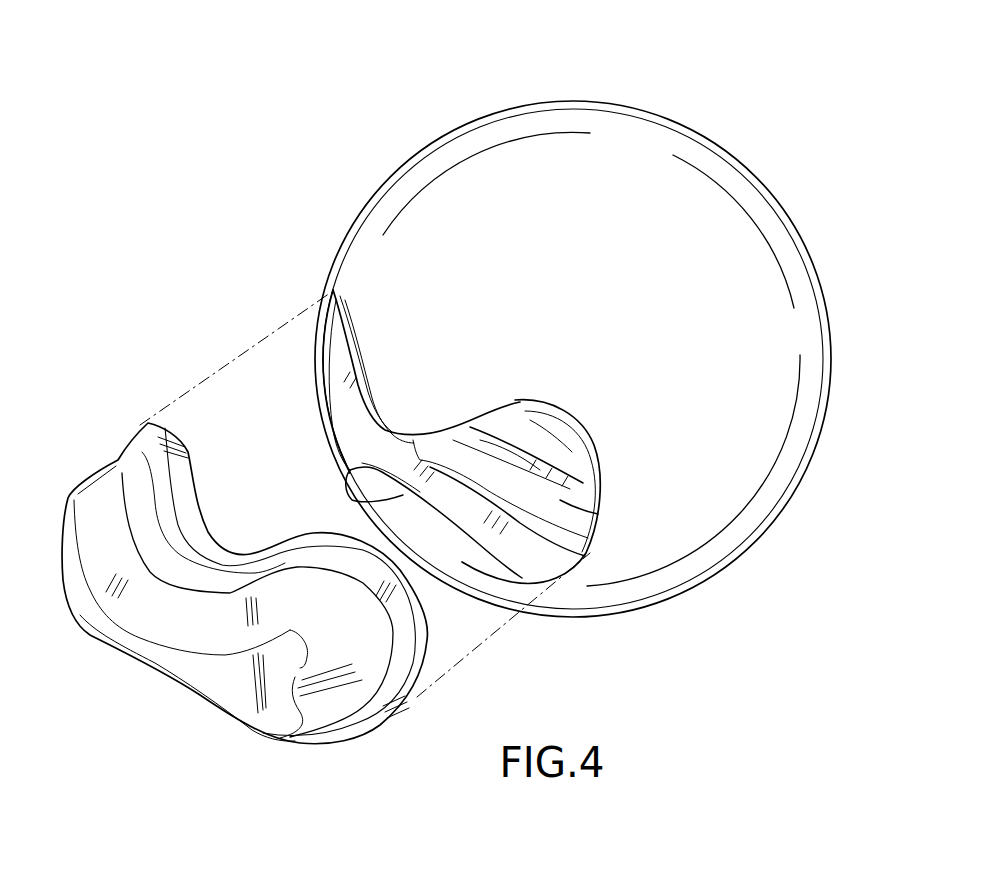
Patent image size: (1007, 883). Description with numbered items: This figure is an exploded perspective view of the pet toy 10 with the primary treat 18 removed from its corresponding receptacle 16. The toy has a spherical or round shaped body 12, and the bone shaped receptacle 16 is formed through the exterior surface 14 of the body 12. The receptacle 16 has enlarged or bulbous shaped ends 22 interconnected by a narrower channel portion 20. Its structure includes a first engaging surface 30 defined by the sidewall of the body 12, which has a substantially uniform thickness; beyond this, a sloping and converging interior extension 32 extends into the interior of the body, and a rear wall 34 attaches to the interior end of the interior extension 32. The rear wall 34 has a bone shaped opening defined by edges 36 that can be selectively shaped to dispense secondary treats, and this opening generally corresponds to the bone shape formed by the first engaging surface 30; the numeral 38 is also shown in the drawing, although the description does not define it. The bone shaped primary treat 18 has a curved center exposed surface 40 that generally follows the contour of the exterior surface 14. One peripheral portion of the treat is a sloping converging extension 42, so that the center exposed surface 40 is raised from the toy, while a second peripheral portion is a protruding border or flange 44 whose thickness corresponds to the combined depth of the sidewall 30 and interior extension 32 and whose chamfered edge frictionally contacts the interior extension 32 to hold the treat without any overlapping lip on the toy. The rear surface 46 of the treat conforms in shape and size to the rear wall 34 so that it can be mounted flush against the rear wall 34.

The pet toy 10 is at (694, 72).
The body 12 is at (786, 176).
The exterior surface 14 is at (621, 256).
The receptacle 16 is at (484, 380).
The primary treat 18 is at (254, 766).
The channel portion 20 is at (400, 445).
The bulbous shaped ends 22 is at (338, 291).
The first engaging surface 30 is at (342, 410).
The interior extension 32 is at (438, 442).
The rear wall 34 is at (590, 514).
The edges 36 is at (500, 456).
The lobe floor 38 is at (543, 446).
The center exposed surface 40 is at (203, 680).
The sloping converging extension 42 is at (100, 497).
The flange 44 is at (140, 438).
The rear surface 46 is at (205, 503).